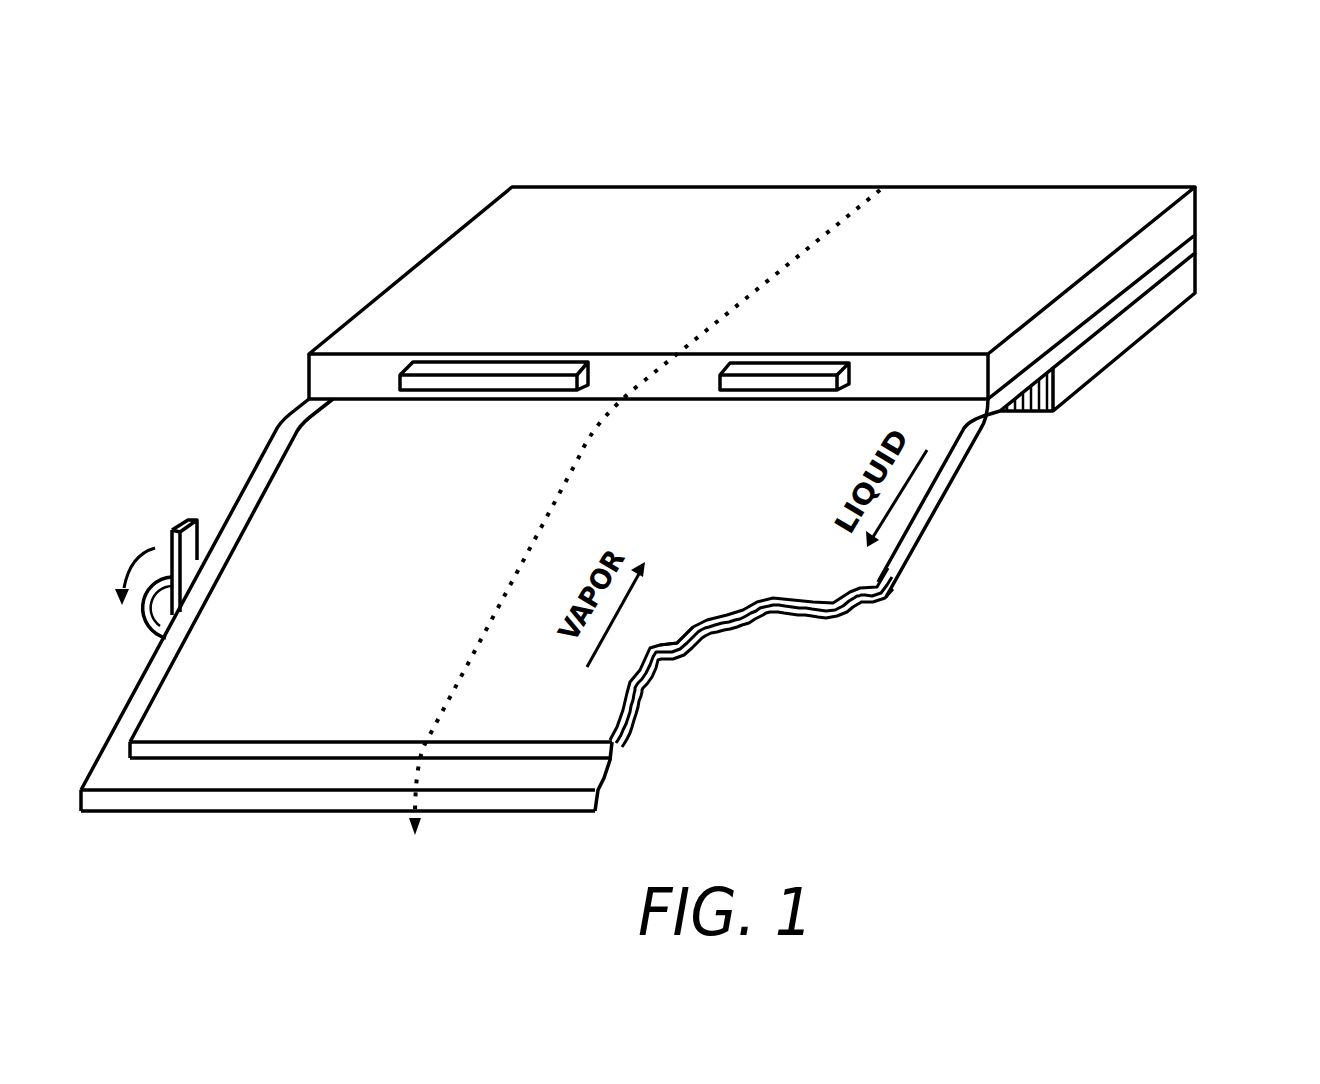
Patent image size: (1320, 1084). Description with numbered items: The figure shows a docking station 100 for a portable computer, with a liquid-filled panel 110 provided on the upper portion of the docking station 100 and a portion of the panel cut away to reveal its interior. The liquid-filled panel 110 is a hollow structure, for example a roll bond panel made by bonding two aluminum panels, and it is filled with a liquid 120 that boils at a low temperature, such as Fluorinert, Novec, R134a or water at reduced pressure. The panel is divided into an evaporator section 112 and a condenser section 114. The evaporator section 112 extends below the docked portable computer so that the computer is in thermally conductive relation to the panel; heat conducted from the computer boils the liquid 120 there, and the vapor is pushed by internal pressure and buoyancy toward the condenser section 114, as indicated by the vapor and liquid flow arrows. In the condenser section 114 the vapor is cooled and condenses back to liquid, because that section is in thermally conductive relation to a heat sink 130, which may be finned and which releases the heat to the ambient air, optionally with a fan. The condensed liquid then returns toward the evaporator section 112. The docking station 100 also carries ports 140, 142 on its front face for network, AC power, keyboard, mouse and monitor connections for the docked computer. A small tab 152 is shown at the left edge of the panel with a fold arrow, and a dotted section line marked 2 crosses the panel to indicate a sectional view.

The docking station 100 is at (800, 78).
The liquid-filled panel 110 is at (248, 681).
The evaporator section 112 is at (963, 453).
The condenser section 114 is at (1197, 247).
The liquid 120 is at (703, 638).
The heat sink 130 is at (1133, 345).
The port 140 is at (487, 364).
The port 142 is at (810, 363).
The tab 152 is at (187, 521).
The section line of FIG. 2 is at (417, 757).